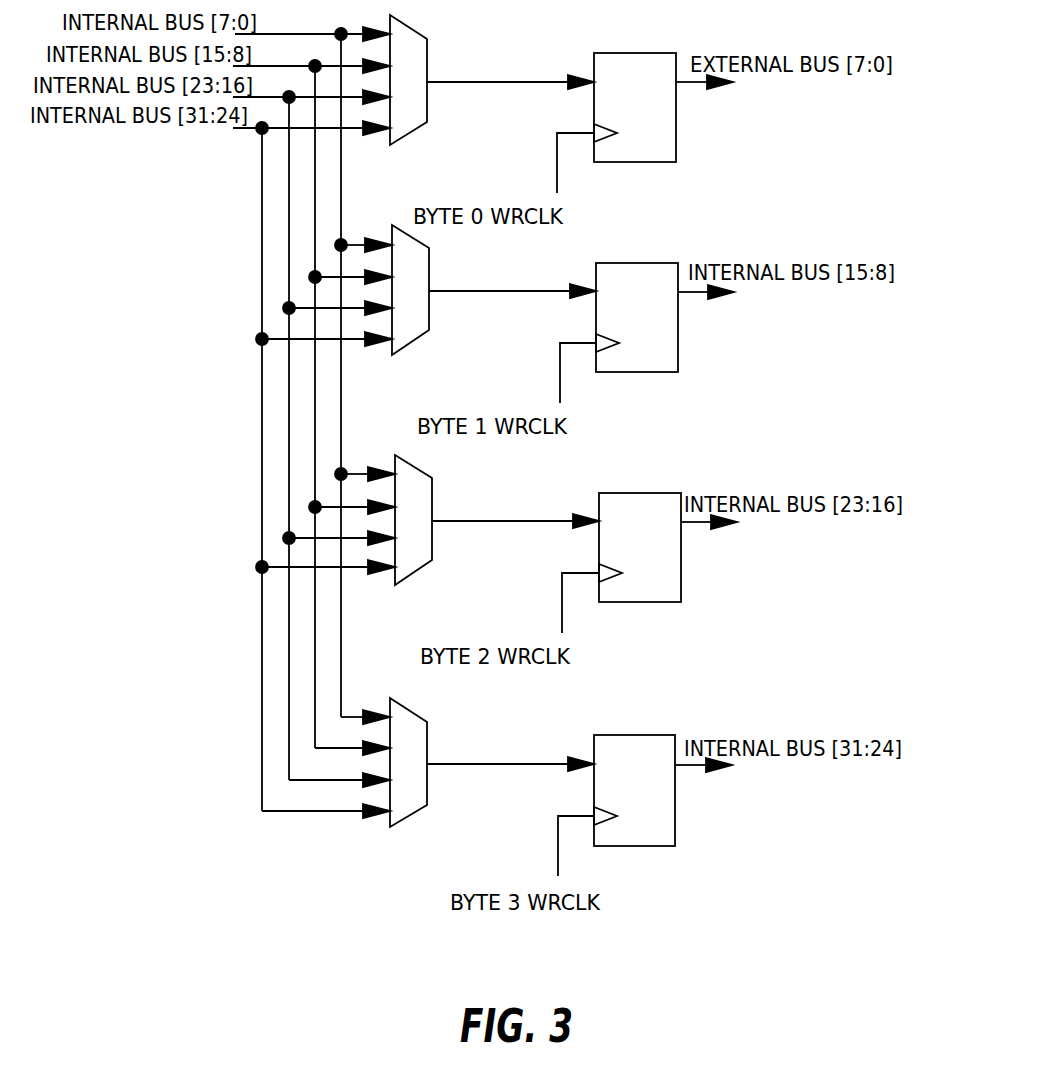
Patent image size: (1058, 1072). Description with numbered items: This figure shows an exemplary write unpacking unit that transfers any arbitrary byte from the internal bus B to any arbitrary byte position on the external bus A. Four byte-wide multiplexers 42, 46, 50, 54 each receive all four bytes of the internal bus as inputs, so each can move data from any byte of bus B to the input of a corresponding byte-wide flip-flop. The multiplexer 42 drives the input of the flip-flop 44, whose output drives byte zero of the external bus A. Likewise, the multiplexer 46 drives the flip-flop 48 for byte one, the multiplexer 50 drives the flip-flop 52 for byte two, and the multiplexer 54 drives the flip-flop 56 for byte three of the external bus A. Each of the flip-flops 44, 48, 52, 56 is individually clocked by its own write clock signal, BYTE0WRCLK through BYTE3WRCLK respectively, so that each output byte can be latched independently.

The multiplexer 42 is at (408, 80).
The flip-flop 44 is at (635, 107).
The multiplexer 46 is at (410, 290).
The flip-flop 48 is at (637, 317).
The multiplexer 50 is at (413, 520).
The flip-flop 52 is at (640, 547).
The multiplexer 54 is at (408, 762).
The flip-flop 56 is at (634, 790).